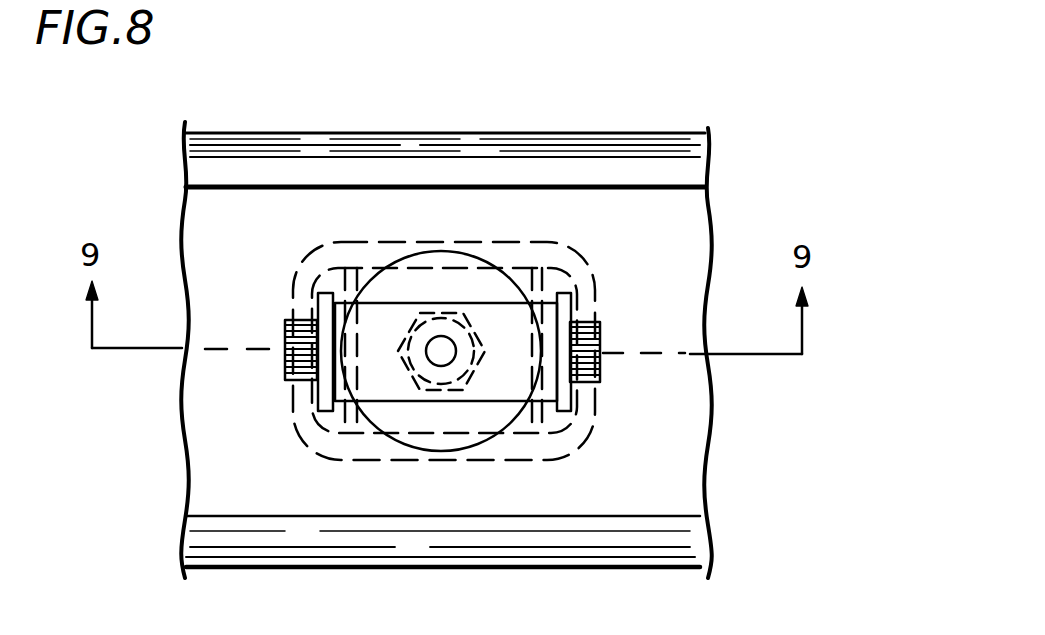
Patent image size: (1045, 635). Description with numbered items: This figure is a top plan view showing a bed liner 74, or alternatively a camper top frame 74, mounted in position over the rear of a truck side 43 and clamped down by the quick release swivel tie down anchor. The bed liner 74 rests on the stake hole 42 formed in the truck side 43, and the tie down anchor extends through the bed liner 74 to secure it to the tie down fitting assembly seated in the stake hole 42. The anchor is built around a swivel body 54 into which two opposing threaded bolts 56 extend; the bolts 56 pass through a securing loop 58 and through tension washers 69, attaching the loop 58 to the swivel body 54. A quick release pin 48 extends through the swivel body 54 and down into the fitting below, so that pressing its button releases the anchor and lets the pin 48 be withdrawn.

The stake hole 42 is at (357, 242).
The truck side 43 is at (668, 134).
The quick release pin 48 is at (432, 0).
The swivel body 54 is at (399, 458).
The threaded bolts 56 is at (284, 368).
The securing loop 58 is at (483, 402).
The tension washers 69 is at (318, 306).
The bed liner 74 is at (710, 484).